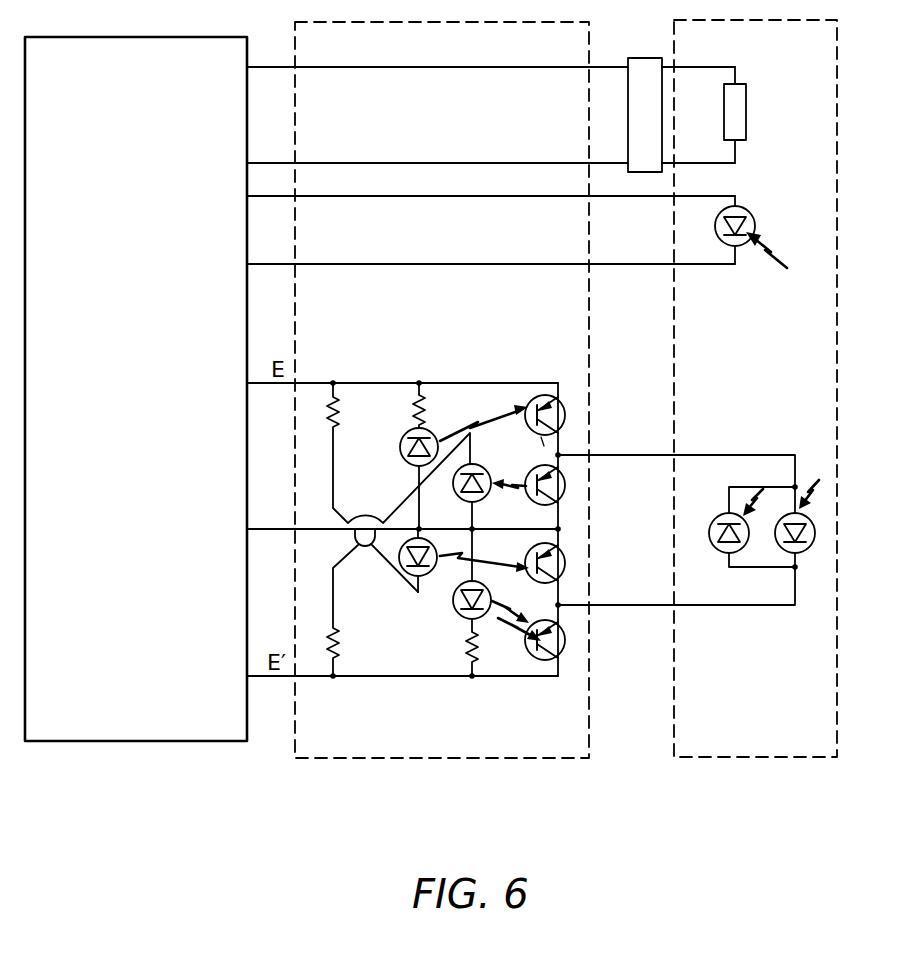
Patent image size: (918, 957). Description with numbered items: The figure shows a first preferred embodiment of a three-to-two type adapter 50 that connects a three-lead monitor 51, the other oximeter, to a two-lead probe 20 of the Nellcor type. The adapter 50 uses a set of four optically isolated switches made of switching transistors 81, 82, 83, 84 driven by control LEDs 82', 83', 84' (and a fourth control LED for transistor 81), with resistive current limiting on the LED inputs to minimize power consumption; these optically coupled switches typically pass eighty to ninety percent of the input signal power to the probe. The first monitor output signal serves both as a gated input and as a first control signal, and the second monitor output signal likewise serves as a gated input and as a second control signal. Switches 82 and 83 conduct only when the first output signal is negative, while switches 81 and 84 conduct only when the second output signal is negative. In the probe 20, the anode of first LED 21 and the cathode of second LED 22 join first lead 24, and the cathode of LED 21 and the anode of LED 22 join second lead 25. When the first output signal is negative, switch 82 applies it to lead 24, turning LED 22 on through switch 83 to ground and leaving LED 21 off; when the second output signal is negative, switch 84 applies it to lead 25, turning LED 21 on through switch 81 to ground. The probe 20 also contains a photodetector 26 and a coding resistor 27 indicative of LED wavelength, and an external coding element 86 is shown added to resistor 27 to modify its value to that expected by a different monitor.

The 3-lead monitor 51 is at (176, 742).
The 3-to-2 type adapter 50 is at (481, 758).
The 2-lead probe 20 is at (775, 757).
The external coding element 86 is at (643, 58).
The resistor 27 is at (746, 112).
The photodetector 26 is at (758, 236).
The first lead 24 is at (750, 455).
The second lead 25 is at (733, 607).
The second LED 22 is at (716, 515).
The first LED 21 is at (815, 535).
The switching transistor 82 is at (534, 398).
The switching transistor 81 is at (476, 464).
The switching transistor 83 is at (580, 568).
The switching transistor 84 is at (550, 665).
The control LED 82' is at (464, 456).
The control LED 83' is at (444, 570).
The control LED 84' is at (472, 604).